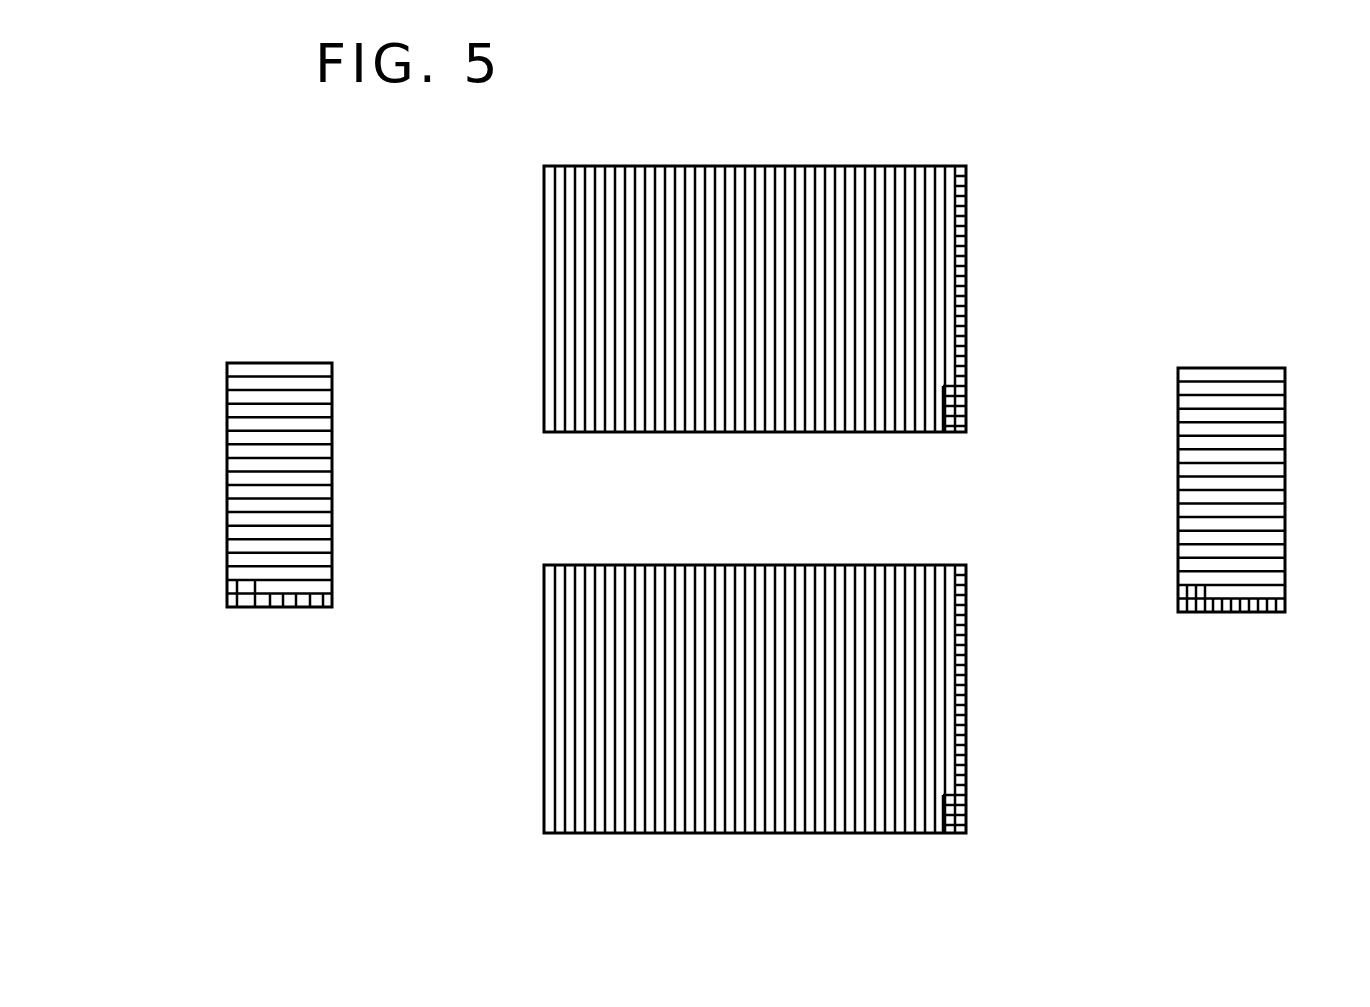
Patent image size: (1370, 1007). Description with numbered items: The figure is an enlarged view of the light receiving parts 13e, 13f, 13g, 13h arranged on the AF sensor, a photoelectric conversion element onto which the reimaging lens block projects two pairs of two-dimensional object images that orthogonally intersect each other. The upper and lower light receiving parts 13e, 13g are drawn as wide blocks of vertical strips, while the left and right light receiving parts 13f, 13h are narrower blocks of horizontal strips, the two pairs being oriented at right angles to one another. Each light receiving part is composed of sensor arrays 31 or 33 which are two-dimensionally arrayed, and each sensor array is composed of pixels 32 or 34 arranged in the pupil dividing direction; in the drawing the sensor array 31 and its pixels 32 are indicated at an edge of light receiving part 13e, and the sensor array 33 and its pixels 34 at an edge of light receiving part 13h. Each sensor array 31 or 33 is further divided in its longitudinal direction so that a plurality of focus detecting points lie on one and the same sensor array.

The light receiving part 13e is at (884, 166).
The light receiving part 13f is at (283, 607).
The light receiving part 13g is at (874, 833).
The light receiving part 13h is at (1228, 612).
The sensor array 31 is at (961, 166).
The pixel 32 is at (966, 396).
The sensor array 33 is at (1285, 602).
The pixel 34 is at (1199, 612).